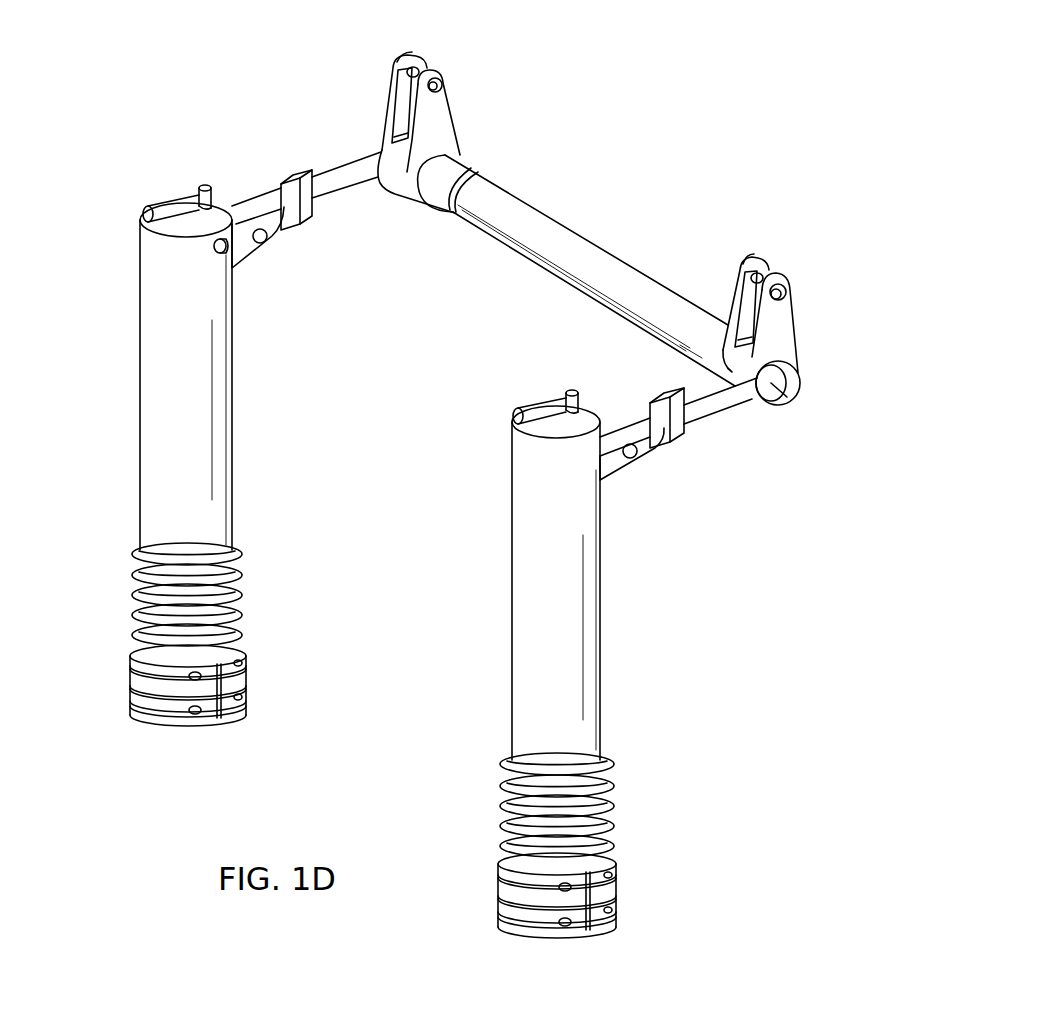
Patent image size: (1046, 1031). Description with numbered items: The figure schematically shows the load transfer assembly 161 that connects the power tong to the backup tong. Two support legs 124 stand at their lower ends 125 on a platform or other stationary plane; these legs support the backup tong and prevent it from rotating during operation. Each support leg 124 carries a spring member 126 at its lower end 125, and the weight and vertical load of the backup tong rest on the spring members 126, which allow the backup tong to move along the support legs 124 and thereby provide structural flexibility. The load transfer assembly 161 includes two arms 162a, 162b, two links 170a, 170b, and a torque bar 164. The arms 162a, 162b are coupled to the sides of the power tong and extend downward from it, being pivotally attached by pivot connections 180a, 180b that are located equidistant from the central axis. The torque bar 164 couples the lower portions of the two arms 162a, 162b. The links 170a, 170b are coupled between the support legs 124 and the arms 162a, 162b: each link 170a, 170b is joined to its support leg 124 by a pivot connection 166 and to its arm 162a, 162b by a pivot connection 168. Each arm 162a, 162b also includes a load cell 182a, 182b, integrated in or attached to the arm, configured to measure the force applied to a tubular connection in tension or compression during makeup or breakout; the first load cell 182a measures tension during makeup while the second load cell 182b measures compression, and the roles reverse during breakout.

The load transfer assembly 161 is at (133, 128).
The support legs 124 is at (158, 447).
The lower ends 125 is at (215, 722).
The spring member 126 is at (130, 566).
The arm 162a is at (780, 330).
The arm 162b is at (440, 115).
The torque bar 164 is at (545, 205).
The pivot connection 166 is at (262, 243).
The pivot connection 168 is at (790, 402).
The link 170a is at (722, 405).
The link 170b is at (344, 163).
The pivot connection 180a is at (742, 262).
The pivot connection 180b is at (410, 60).
The load cell 182a is at (680, 430).
The load cell 182b is at (308, 214).